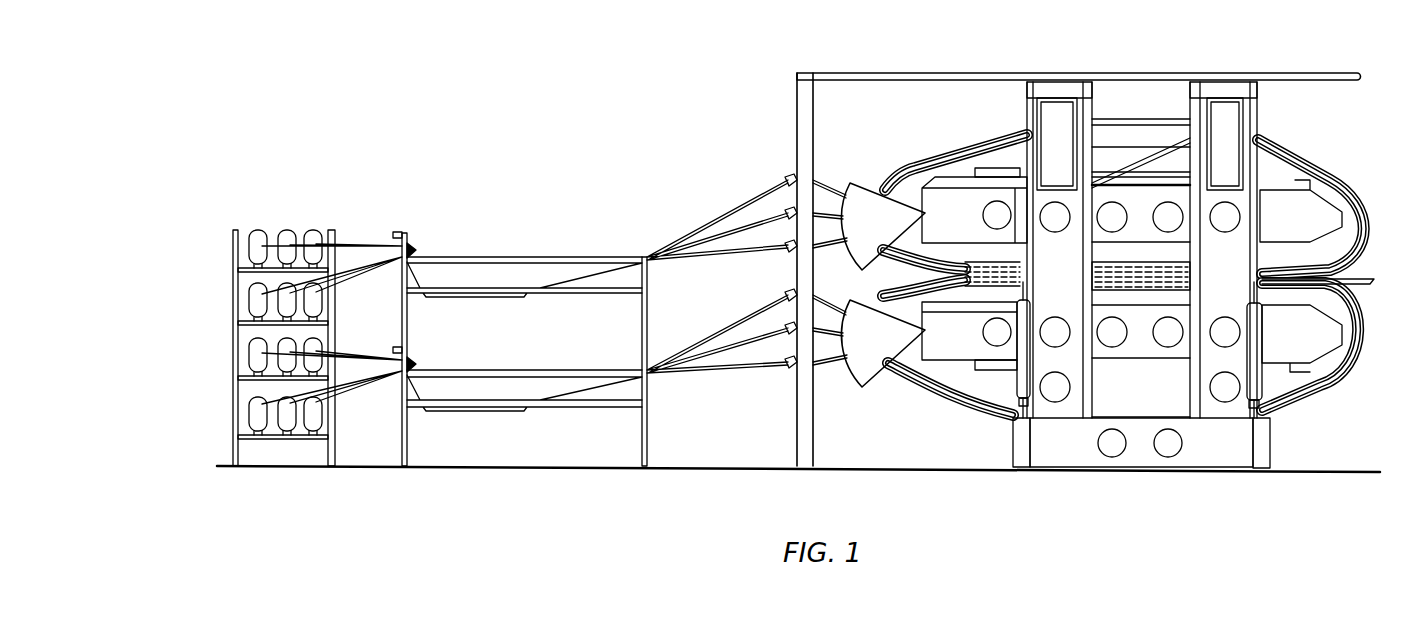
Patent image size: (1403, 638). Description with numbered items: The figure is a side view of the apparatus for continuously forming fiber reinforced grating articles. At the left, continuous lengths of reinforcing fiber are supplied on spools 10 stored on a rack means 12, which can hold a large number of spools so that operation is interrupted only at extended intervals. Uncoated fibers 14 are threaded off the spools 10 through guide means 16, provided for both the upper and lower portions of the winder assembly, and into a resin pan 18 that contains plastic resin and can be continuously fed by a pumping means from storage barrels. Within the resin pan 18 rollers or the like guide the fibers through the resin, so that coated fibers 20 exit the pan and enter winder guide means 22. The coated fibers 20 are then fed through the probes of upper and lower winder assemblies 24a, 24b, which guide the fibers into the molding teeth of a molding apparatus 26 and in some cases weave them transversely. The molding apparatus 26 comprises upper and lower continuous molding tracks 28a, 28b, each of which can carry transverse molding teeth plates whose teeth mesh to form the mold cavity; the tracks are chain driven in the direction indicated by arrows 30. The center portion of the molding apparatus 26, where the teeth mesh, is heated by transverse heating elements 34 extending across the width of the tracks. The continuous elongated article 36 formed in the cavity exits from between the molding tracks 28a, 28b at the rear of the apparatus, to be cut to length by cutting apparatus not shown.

The spools 10 is at (308, 236).
The rack means 12 is at (236, 230).
The uncoated fibers 14 is at (364, 242).
The guide means 16 is at (412, 240).
The resin pan 18 is at (482, 288).
The coated fibers 20 is at (700, 230).
The winder guide means 22 is at (788, 176).
The upper winder assembly 24a is at (895, 228).
The lower winder assembly 24b is at (894, 349).
The molding apparatus 26 is at (1148, 99).
The upper continuous molding track 28a is at (1325, 182).
The lower continuous molding track 28b is at (1325, 385).
The arrows 30 is at (874, 181).
The transverse heating elements 34 is at (1085, 264).
The continuous elongated article 36 is at (1372, 284).